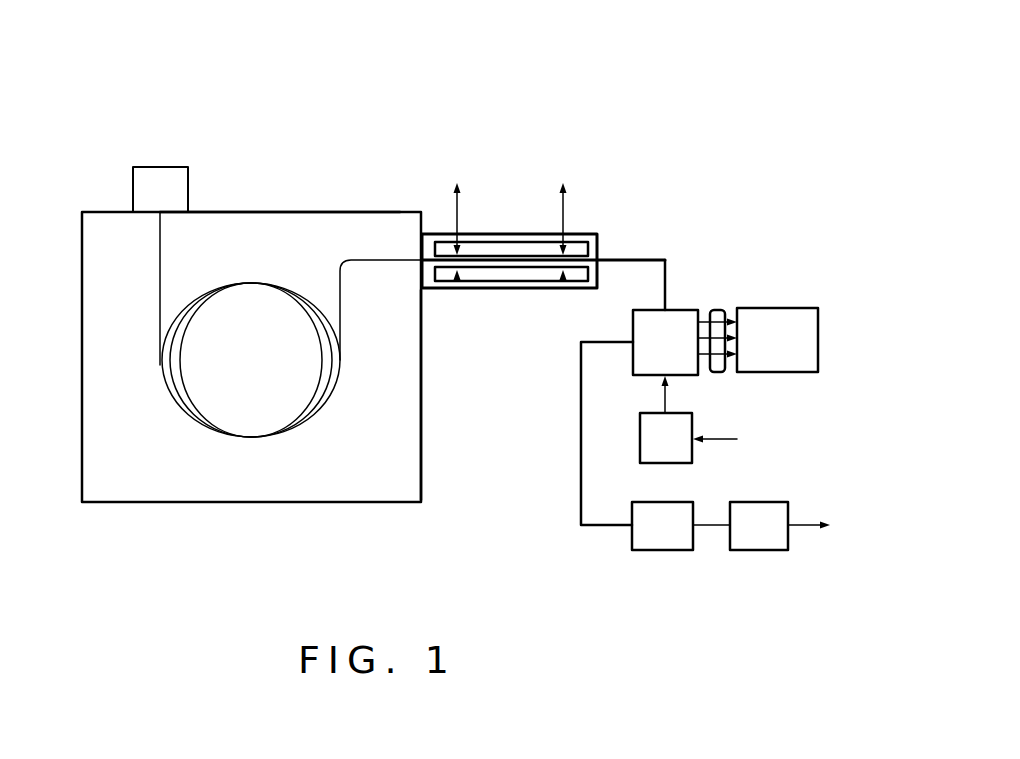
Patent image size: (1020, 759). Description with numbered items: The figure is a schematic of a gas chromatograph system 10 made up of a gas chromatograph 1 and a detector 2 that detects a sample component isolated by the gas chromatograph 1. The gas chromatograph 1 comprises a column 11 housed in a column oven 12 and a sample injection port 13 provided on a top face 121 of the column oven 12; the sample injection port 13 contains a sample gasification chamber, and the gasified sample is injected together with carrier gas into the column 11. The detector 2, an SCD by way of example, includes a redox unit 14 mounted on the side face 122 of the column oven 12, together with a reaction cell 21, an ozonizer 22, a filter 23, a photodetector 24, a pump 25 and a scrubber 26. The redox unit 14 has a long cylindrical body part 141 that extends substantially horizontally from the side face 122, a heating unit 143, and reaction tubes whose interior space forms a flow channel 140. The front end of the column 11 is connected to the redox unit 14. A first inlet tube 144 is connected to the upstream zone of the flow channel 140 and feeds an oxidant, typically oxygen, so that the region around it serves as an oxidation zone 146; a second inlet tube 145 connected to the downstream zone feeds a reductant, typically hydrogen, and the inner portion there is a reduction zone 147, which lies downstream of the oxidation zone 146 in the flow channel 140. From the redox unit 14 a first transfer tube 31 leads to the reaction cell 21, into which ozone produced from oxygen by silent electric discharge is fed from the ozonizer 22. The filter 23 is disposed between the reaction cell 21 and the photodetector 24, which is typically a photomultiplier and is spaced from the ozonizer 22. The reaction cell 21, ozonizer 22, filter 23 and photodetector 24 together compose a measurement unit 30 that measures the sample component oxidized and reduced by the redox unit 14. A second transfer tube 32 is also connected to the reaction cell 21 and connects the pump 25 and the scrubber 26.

The gas chromatograph 1 is at (145, 540).
The gas chromatograph system 10 is at (592, 91).
The column oven 12 is at (332, 513).
The top face 121 is at (275, 210).
The side face 122 is at (423, 422).
The sample injection port 13 is at (168, 167).
The column 11 is at (315, 415).
The redox unit 14 is at (526, 224).
The flow channel 140 is at (505, 257).
The body part 141 is at (590, 234).
The heating unit 143 is at (488, 283).
The first inlet tube 144 is at (472, 192).
The second inlet tube 145 is at (552, 192).
The oxidation zone 146 is at (457, 280).
The reduction zone 147 is at (563, 280).
The detector 2 is at (523, 452).
The measurement unit 30 is at (770, 215).
The first transfer tube 31 is at (653, 259).
The second transfer tube 32 is at (607, 525).
The reaction cell 21 is at (682, 310).
The ozonizer 22 is at (692, 449).
The filter 23 is at (722, 310).
The photodetector 24 is at (788, 308).
The pump 25 is at (760, 550).
The scrubber 26 is at (665, 550).